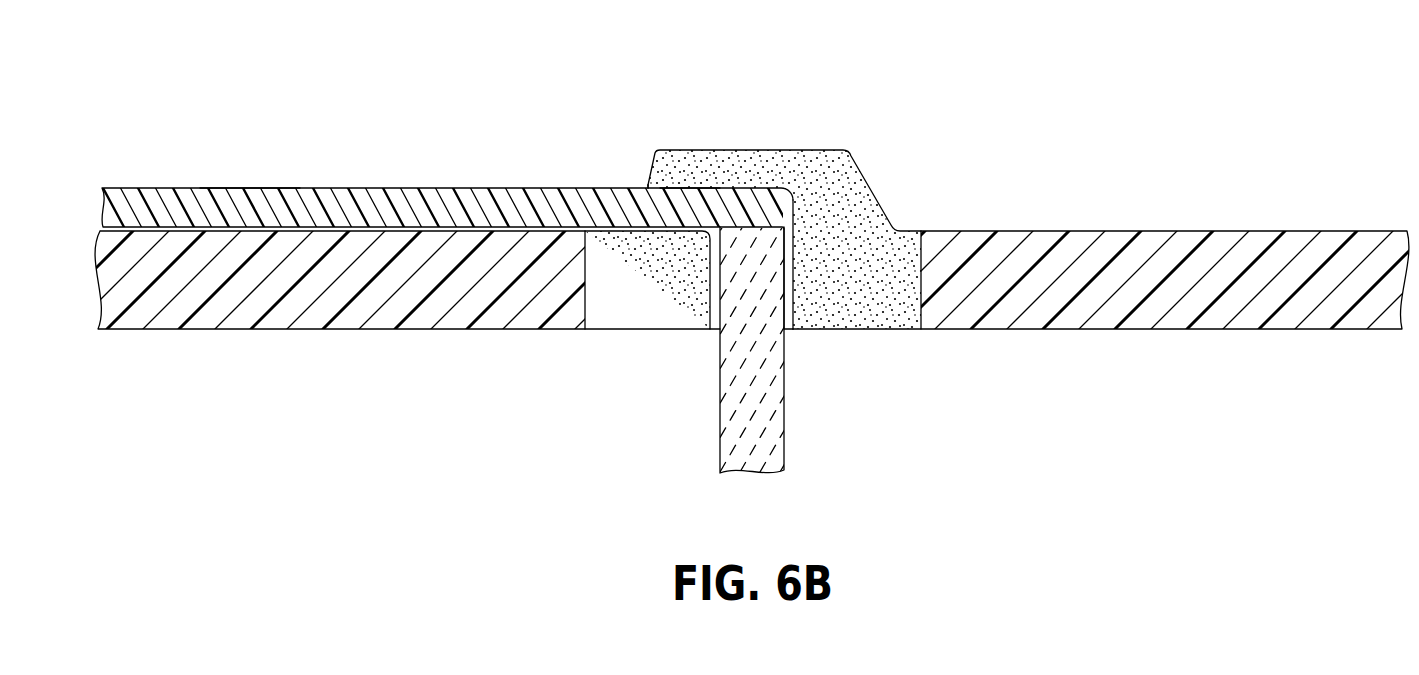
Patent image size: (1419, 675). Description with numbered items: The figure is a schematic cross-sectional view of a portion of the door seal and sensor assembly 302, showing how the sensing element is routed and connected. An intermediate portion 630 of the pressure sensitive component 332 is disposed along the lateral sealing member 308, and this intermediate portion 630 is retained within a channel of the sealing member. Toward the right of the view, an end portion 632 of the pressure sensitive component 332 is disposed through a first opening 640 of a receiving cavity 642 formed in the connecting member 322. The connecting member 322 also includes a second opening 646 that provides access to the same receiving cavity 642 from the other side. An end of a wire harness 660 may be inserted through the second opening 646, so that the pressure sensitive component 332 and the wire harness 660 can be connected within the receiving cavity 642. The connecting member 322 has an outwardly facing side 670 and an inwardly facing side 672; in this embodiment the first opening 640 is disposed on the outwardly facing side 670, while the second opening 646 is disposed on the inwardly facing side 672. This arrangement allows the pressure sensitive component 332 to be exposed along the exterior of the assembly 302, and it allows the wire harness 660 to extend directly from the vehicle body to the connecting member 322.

The assembly 302 is at (1186, 245).
The lateral sealing member 308 is at (282, 318).
The connecting member 322 is at (835, 172).
The pressure sensitive component 332 is at (253, 186).
The intermediate portion 630 is at (345, 188).
The end portion 632 is at (690, 200).
The first opening 640 is at (638, 171).
The receiving cavity 642 is at (795, 267).
The second opening 646 is at (795, 342).
The wire harness 660 is at (728, 414).
The outwardly facing side 670 is at (749, 128).
The inwardly facing side 672 is at (615, 352).